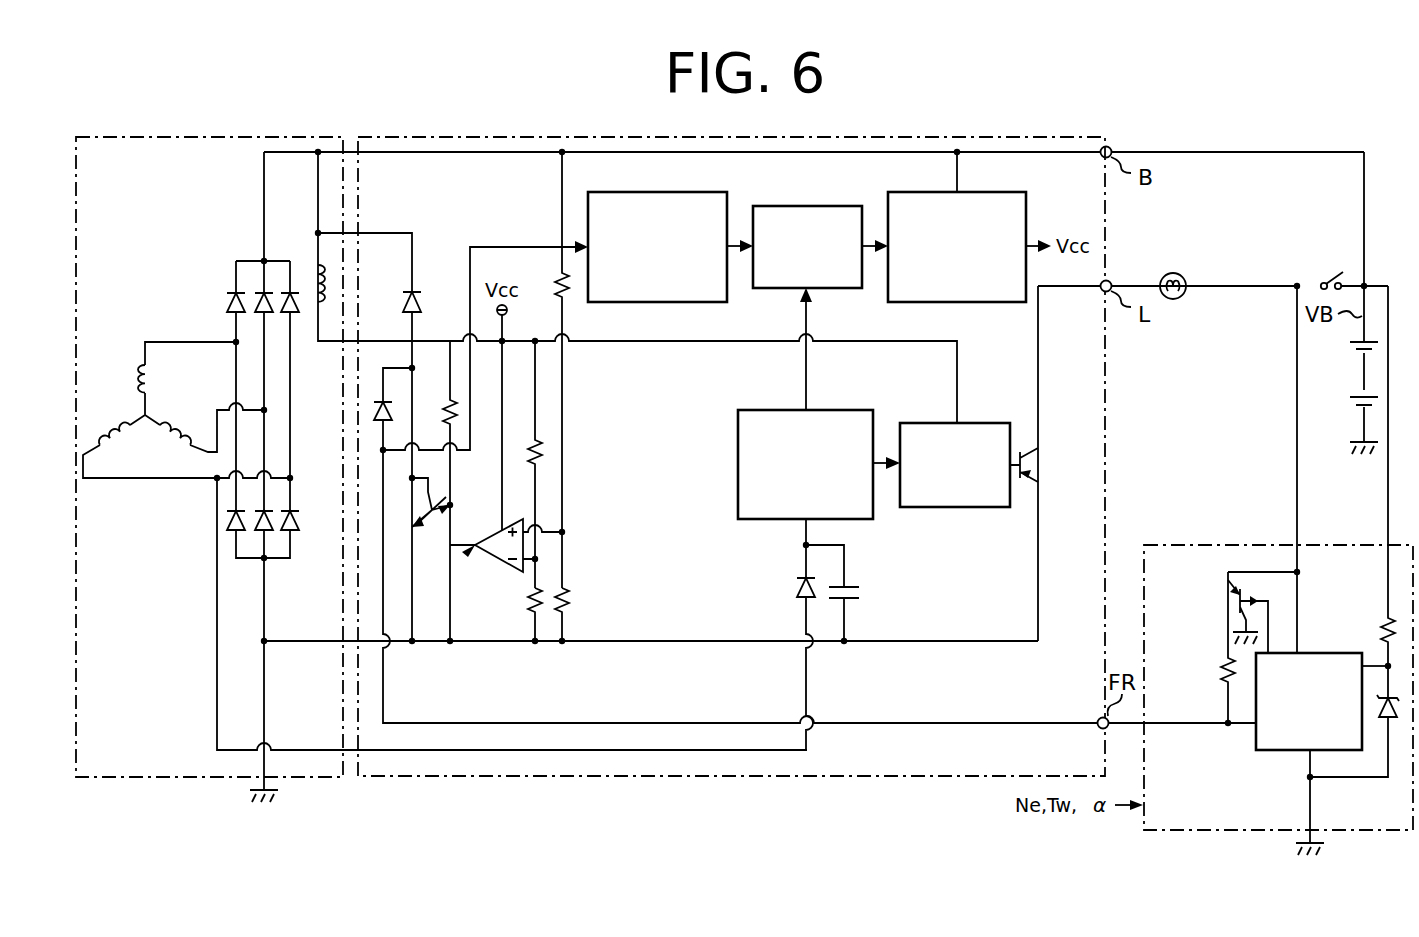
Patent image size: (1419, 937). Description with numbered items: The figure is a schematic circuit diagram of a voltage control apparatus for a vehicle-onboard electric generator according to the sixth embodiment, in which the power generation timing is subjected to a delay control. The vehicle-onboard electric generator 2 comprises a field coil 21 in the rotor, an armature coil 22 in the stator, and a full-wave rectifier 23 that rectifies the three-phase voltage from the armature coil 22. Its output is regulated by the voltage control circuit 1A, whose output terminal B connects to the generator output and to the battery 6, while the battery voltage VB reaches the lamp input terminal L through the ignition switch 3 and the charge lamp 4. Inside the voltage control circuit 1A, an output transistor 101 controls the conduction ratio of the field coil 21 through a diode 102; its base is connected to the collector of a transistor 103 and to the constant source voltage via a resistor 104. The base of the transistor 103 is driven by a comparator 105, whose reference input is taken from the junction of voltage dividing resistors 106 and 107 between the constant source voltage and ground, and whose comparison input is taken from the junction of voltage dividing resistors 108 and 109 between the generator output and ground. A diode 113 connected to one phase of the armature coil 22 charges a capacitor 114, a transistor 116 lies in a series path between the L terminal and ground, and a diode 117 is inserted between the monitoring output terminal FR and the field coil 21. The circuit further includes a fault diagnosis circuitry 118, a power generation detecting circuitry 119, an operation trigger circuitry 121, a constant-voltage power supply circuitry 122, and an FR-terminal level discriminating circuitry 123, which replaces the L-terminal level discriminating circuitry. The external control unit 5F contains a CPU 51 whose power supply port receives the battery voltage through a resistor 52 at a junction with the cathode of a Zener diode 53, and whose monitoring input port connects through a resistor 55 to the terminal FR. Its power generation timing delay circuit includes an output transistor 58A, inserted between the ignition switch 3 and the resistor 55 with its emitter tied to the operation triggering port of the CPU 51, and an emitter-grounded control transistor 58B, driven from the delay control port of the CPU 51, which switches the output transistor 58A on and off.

The vehicle-onboard electric generator 2 is at (140, 778).
The field coil 21 is at (316, 274).
The armature coil 22 is at (144, 382).
The full-wave rectifier 23 is at (248, 340).
The voltage control circuit 1A is at (726, 779).
The output transistor 101 is at (443, 506).
The diode 102 is at (426, 302).
The transistor 103 is at (466, 558).
The resistor 104 is at (450, 394).
The comparator 105 is at (488, 560).
The voltage dividing resistor 106 is at (540, 437).
The voltage dividing resistor 107 is at (526, 616).
The voltage dividing resistor 108 is at (570, 292).
The voltage dividing resistor 109 is at (562, 616).
The diode 113 is at (796, 587).
The capacitor 114 is at (862, 594).
The transistor 116 is at (1030, 478).
The diode 117 is at (383, 398).
The fault diagnosis circuitry 118 is at (961, 423).
The power generation detecting circuitry 119 is at (840, 410).
The operation trigger circuitry 121 is at (806, 206).
The constant-voltage power supply circuitry 122 is at (970, 192).
The FR-terminal level discriminating circuitry 123 is at (636, 192).
The ignition switch 3 is at (1330, 278).
The charge lamp 4 is at (1173, 273).
The battery 6 is at (1358, 382).
The external control unit 5F is at (1252, 844).
The CPU 51 is at (1335, 653).
The resistor 52 is at (1386, 621).
The Zener diode 53 is at (1394, 720).
The resistor 55 is at (1226, 660).
The output transistor 58A is at (1224, 591).
The control transistor 58B is at (1268, 602).